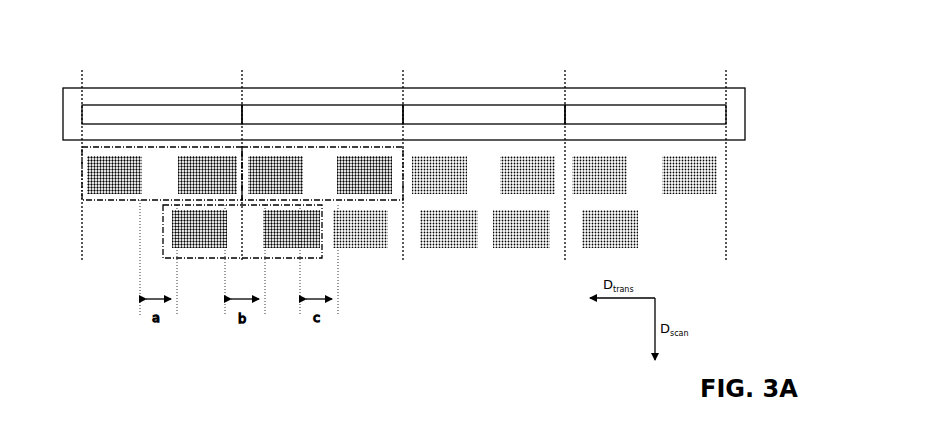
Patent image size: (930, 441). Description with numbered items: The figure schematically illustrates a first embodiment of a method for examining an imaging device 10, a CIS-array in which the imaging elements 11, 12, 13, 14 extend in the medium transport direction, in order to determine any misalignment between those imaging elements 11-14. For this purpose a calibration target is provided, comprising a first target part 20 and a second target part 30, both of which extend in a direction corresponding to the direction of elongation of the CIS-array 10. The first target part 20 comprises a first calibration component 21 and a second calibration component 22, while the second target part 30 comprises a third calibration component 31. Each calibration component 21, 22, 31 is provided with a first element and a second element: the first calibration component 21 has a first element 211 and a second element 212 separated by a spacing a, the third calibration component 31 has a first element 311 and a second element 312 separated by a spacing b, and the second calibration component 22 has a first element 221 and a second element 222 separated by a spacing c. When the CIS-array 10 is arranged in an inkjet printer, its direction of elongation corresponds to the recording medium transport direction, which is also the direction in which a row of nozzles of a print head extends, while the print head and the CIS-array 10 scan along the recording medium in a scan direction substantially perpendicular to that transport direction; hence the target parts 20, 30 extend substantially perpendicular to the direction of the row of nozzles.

The imaging device 10 is at (760, 94).
The imaging element 11 is at (150, 113).
The imaging element 12 is at (303, 113).
The imaging element 13 is at (458, 113).
The imaging element 14 is at (605, 113).
The first target part 20 is at (753, 175).
The second target part 30 is at (753, 228).
The first calibration component 21 is at (90, 202).
The second calibration component 22 is at (320, 247).
The third calibration component 31 is at (345, 202).
The first element 211 is at (125, 188).
The second element 212 is at (190, 175).
The first element 221 is at (283, 173).
The second element 222 is at (370, 178).
The first element 311 is at (200, 240).
The second element 312 is at (290, 240).